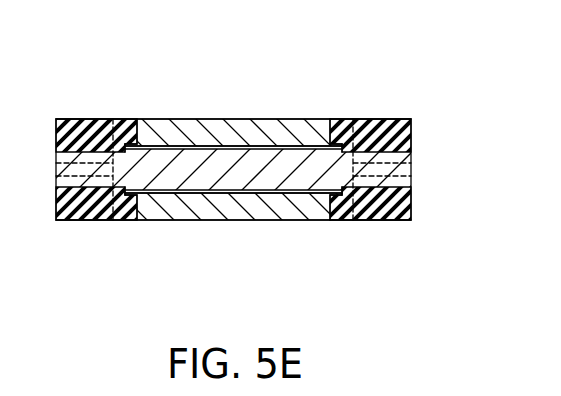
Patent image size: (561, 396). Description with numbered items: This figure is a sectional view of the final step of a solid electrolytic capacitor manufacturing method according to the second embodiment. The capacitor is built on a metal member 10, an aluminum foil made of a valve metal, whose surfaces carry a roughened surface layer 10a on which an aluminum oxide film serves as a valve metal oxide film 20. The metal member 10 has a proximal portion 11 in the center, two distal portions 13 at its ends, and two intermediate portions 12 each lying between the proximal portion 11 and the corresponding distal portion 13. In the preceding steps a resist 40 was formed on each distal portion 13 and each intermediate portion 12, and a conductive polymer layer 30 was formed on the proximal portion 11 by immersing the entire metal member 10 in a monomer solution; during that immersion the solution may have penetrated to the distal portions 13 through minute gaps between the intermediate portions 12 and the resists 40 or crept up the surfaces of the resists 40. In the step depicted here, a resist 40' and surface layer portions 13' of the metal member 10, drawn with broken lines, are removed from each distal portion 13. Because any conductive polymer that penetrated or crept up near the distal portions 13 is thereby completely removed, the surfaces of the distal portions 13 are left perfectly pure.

The metal member 10 is at (413, 290).
The roughened surface layer 10a is at (170, 146).
The proximal portion 11 is at (230, 174).
The intermediate portion 12 is at (128, 196).
The distal portion 13 is at (233, 201).
The surface layer portion 13' is at (256, 150).
The valve metal oxide film 20 is at (227, 146).
The conductive polymer layer 30 is at (247, 125).
The resist 40 is at (233, 127).
The resist 40' is at (226, 137).